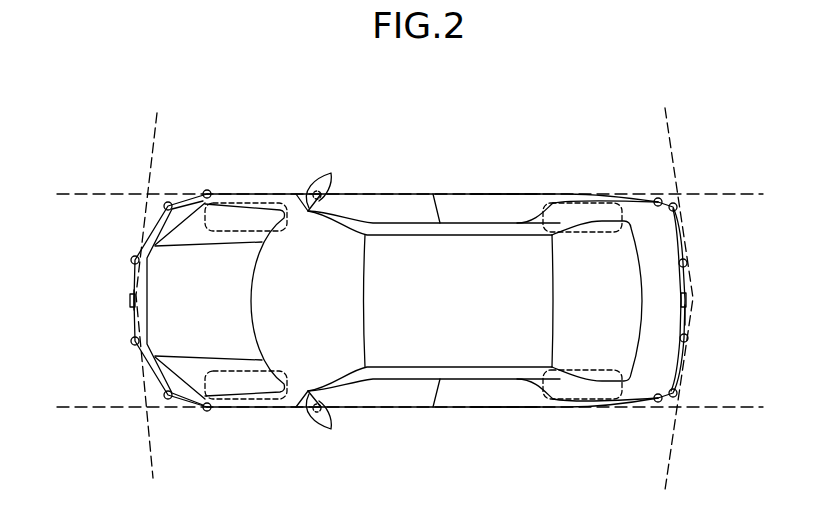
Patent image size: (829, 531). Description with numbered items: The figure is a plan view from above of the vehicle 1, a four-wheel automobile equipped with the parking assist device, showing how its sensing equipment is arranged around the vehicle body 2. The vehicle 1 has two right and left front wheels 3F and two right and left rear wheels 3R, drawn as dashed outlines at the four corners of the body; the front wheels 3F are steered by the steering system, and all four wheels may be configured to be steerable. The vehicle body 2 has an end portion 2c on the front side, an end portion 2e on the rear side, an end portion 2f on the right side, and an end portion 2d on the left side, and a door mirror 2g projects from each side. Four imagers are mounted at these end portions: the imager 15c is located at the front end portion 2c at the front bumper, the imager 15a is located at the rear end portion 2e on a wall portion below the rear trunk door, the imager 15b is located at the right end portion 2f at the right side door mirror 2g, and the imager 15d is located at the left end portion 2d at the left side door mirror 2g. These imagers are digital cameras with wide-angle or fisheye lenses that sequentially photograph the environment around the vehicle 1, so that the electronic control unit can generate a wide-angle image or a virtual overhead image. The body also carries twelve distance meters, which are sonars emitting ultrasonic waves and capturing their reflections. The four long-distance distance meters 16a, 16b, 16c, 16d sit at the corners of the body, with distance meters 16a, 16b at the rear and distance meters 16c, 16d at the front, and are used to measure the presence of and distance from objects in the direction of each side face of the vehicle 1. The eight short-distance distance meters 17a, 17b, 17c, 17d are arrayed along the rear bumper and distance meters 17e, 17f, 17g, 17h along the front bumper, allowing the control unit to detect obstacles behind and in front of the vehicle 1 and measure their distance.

The vehicle 1 is at (506, 122).
The vehicle body 2 is at (641, 196).
The end portion on the front side 2c is at (130, 316).
The end portion on the left side 2d is at (495, 408).
The end portion on the rear side 2e is at (689, 316).
The end portion on the right side 2f is at (502, 193).
The door mirror 2g is at (332, 174).
The front wheels 3F is at (246, 202).
The rear wheels 3R is at (581, 201).
The imager 15a is at (688, 299).
The imager 15b is at (317, 190).
The imager 15c is at (128, 299).
The imager 15d is at (316, 412).
The distance meter 16a is at (657, 402).
The distance meter 16b is at (658, 198).
The distance meter 16c is at (207, 190).
The distance meter 16d is at (206, 411).
The distance meter 17a is at (677, 393).
The distance meter 17b is at (688, 338).
The distance meter 17c is at (687, 263).
The distance meter 17d is at (677, 207).
The distance meter 17e is at (164, 206).
The distance meter 17f is at (131, 260).
The distance meter 17g is at (131, 341).
The distance meter 17h is at (164, 395).